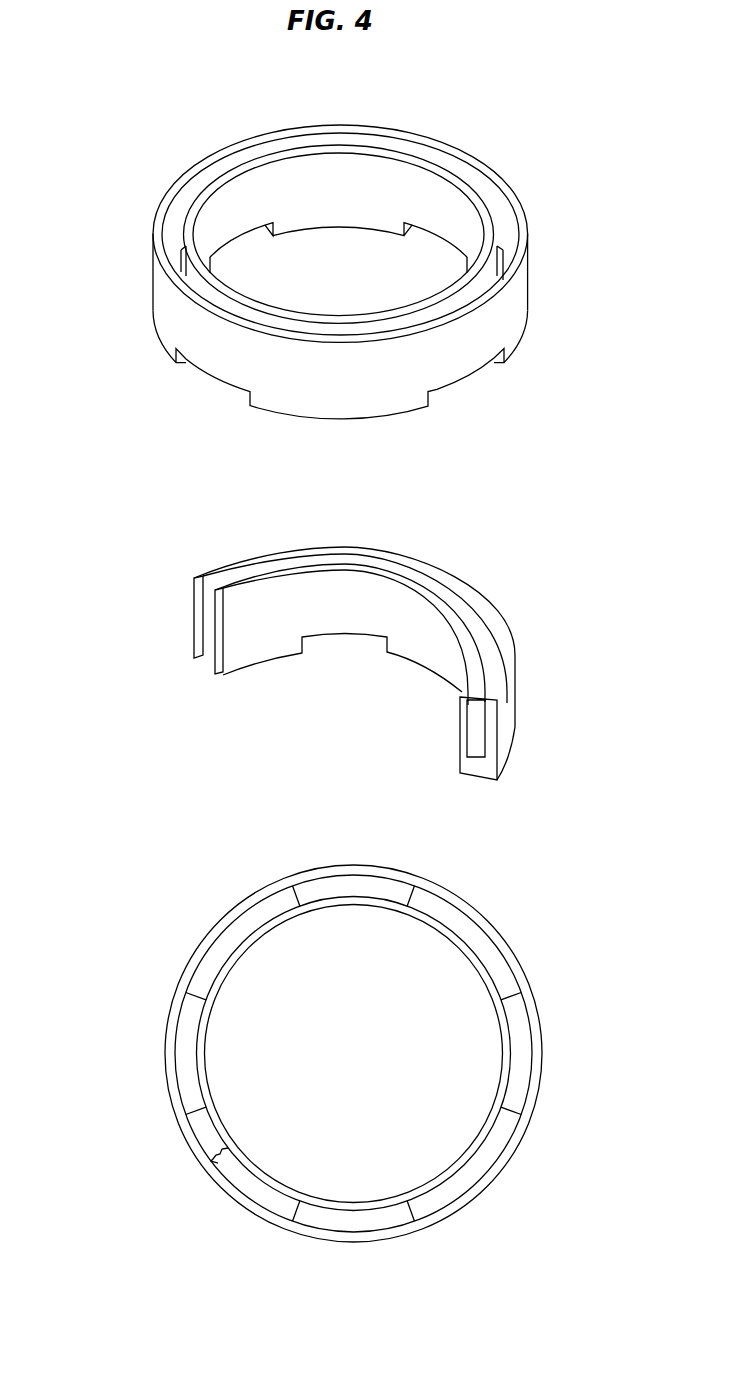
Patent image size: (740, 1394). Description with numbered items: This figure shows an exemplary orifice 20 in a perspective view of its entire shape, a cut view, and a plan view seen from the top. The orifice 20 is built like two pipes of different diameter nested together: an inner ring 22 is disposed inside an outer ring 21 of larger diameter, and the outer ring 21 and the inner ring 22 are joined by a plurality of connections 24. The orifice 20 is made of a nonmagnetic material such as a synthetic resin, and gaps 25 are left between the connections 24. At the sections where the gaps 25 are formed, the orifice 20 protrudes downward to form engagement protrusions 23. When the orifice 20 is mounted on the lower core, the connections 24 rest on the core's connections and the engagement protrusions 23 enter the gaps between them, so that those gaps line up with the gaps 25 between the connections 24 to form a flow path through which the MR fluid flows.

The orifice 20 is at (480, 108).
The outer ring 21 is at (178, 183).
The inner ring 22 is at (488, 214).
The engagement protrusion 23 is at (258, 407).
The connection 24 is at (458, 773).
The gap 25 is at (208, 663).